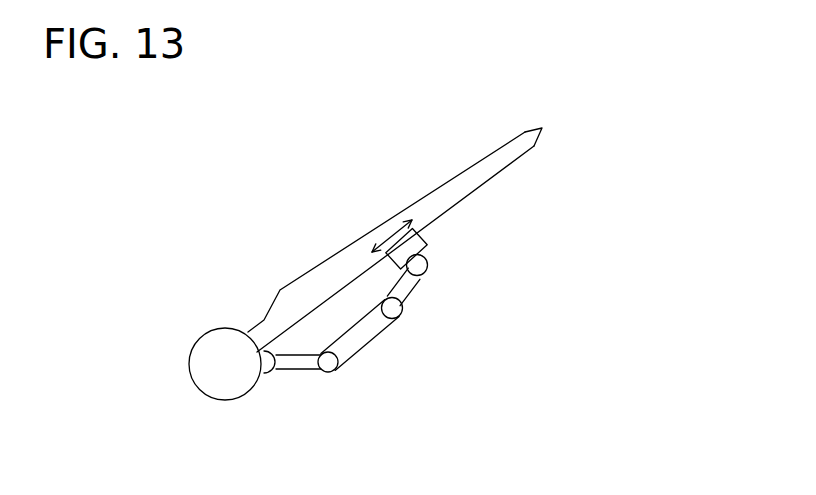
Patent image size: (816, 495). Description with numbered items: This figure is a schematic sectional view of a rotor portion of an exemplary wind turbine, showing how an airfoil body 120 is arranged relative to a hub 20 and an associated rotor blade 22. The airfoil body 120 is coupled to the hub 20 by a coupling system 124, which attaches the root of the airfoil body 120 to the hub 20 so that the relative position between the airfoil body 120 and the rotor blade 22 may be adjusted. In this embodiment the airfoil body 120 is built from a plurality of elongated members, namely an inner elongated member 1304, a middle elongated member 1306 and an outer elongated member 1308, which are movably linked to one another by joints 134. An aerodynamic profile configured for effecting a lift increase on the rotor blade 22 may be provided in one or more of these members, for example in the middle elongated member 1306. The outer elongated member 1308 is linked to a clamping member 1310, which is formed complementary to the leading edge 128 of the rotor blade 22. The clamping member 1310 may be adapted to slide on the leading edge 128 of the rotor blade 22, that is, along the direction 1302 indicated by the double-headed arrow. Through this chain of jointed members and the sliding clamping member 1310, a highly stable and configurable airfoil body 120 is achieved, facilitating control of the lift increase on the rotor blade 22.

The hub 20 is at (206, 338).
The rotor blade 22 is at (522, 133).
The airfoil body 120 is at (412, 344).
The coupling system 124 is at (265, 372).
The leading edge 128 is at (503, 173).
The joints 134 is at (332, 372).
The direction 1302 is at (387, 232).
The inner elongated member 1304 is at (287, 365).
The middle elongated member 1306 is at (353, 343).
The outer elongated member 1308 is at (405, 283).
The clamping member 1310 is at (427, 245).